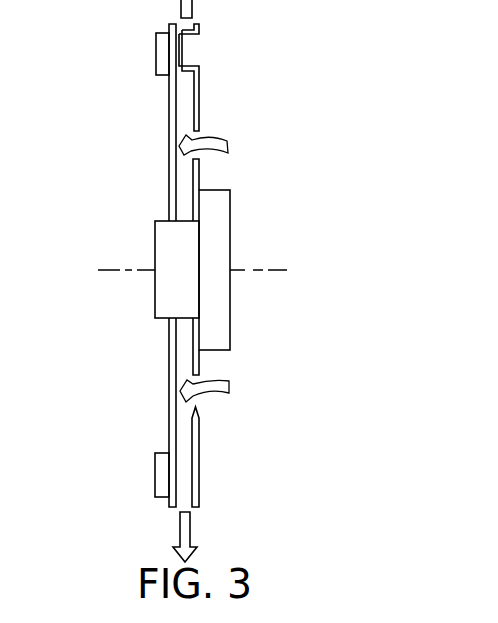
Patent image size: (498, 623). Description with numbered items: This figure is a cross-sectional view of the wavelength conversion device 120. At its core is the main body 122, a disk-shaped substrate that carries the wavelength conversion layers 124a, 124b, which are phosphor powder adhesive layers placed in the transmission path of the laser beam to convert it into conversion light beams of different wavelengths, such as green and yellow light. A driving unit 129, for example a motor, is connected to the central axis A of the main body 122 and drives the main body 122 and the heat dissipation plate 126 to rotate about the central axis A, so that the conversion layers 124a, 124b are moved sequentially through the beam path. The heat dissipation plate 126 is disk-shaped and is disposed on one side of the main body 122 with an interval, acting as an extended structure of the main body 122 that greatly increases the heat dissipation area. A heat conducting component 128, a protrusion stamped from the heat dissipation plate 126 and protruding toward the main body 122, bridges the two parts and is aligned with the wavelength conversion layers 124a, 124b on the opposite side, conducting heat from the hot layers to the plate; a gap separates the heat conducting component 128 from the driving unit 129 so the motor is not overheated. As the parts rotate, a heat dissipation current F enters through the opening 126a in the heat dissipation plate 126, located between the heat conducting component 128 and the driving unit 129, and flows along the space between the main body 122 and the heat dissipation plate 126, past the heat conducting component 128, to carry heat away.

The wavelength conversion device 120 is at (355, 528).
The main body 122 is at (175, 183).
The wavelength conversion layer 124a is at (156, 58).
The wavelength conversion layer 124b is at (158, 472).
The heat dissipation plate 126 is at (197, 107).
The opening 126a is at (195, 420).
The heat conducting component 128 is at (179, 57).
The driving unit 129 is at (207, 243).
The central axis A is at (268, 270).
The heat dissipation current F is at (230, 382).